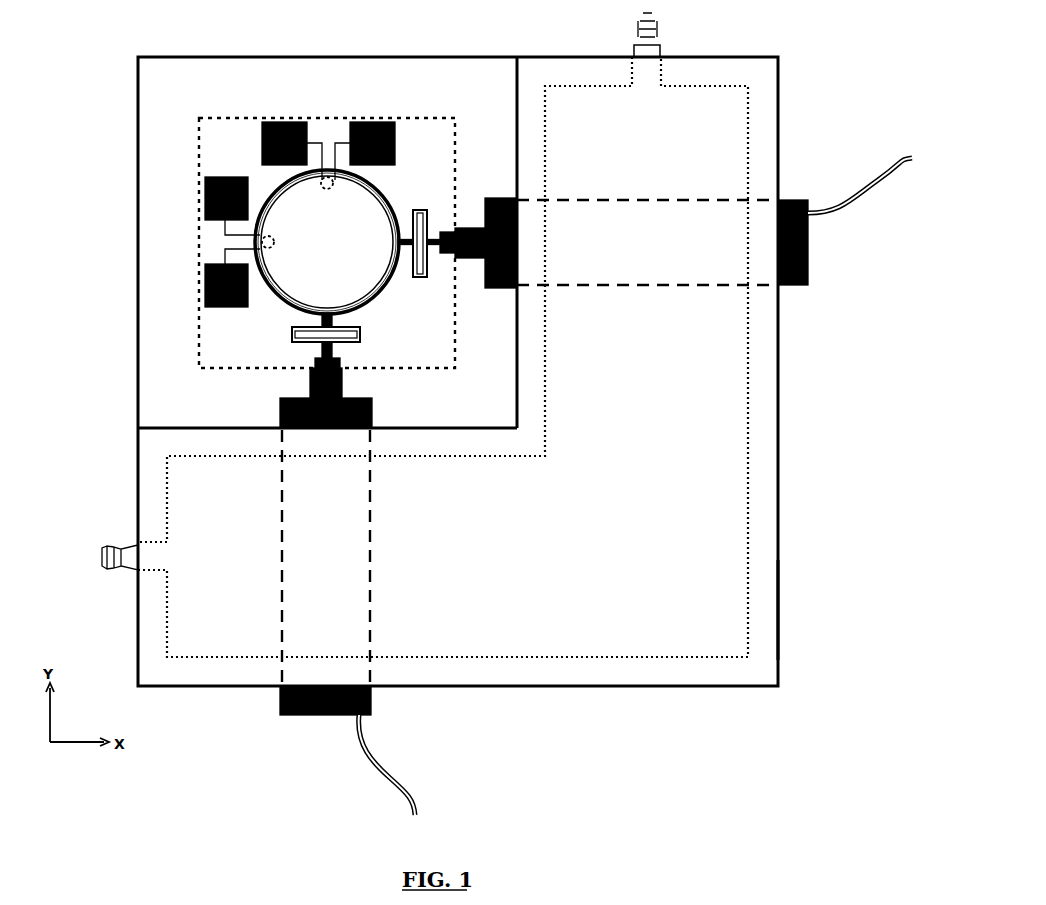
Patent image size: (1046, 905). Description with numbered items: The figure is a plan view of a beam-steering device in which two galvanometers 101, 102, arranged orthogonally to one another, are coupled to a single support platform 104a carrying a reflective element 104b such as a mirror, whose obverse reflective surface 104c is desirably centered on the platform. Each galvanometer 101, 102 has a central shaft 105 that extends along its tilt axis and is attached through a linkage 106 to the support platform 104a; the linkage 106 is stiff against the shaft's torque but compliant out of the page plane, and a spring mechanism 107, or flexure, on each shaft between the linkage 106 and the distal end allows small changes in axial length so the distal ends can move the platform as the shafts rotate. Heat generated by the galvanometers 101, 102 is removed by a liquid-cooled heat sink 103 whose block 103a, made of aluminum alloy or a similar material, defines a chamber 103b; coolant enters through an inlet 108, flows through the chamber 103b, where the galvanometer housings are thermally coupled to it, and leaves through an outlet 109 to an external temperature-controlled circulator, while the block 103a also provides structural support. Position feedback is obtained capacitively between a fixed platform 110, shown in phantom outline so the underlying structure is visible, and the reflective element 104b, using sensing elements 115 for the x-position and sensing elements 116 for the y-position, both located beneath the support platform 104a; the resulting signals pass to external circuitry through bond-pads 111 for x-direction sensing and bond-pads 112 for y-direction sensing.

The galvanometer 101 is at (280, 410).
The galvanometer 102 is at (500, 197).
The liquid-cooled heat sink 103 is at (790, 541).
The block 103a is at (778, 612).
The chamber 103b is at (724, 487).
The support platform 104a is at (392, 193).
The reflective element 104b is at (380, 288).
The reflective surface 104c is at (358, 285).
The central shaft 105 is at (470, 226).
The linkage 106 is at (446, 230).
The spring mechanism 107 is at (415, 272).
The inlet 108 is at (118, 571).
The outlet 109 is at (660, 34).
The fixed platform 110 is at (197, 136).
The bond-pads 111 is at (205, 195).
The bond-pads 112 is at (262, 143).
The sensing elements 115 is at (275, 241).
The sensing elements 116 is at (320, 184).